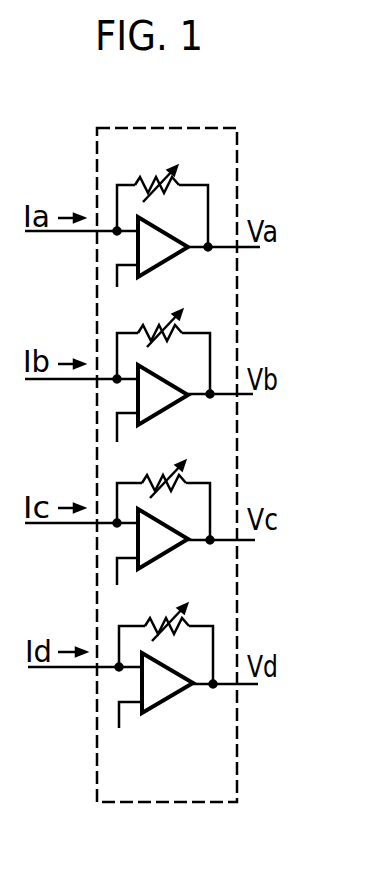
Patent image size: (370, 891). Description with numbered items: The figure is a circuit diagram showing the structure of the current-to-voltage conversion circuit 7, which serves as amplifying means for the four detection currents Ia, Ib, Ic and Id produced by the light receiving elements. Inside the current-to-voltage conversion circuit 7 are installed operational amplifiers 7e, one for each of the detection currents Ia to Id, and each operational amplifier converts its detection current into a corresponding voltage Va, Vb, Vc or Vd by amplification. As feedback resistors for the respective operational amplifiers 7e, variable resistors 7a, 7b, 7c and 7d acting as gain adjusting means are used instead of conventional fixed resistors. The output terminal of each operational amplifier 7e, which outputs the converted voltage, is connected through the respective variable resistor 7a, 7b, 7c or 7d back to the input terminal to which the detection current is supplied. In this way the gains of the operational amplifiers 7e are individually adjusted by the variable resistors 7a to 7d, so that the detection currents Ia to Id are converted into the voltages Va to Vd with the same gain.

The current-to-voltage conversion circuit 7 is at (237, 755).
The variable resistor 7a is at (182, 177).
The variable resistor 7b is at (185, 325).
The variable resistor 7c is at (188, 473).
The variable resistor 7d is at (190, 622).
The operational amplifier 7e is at (153, 247).